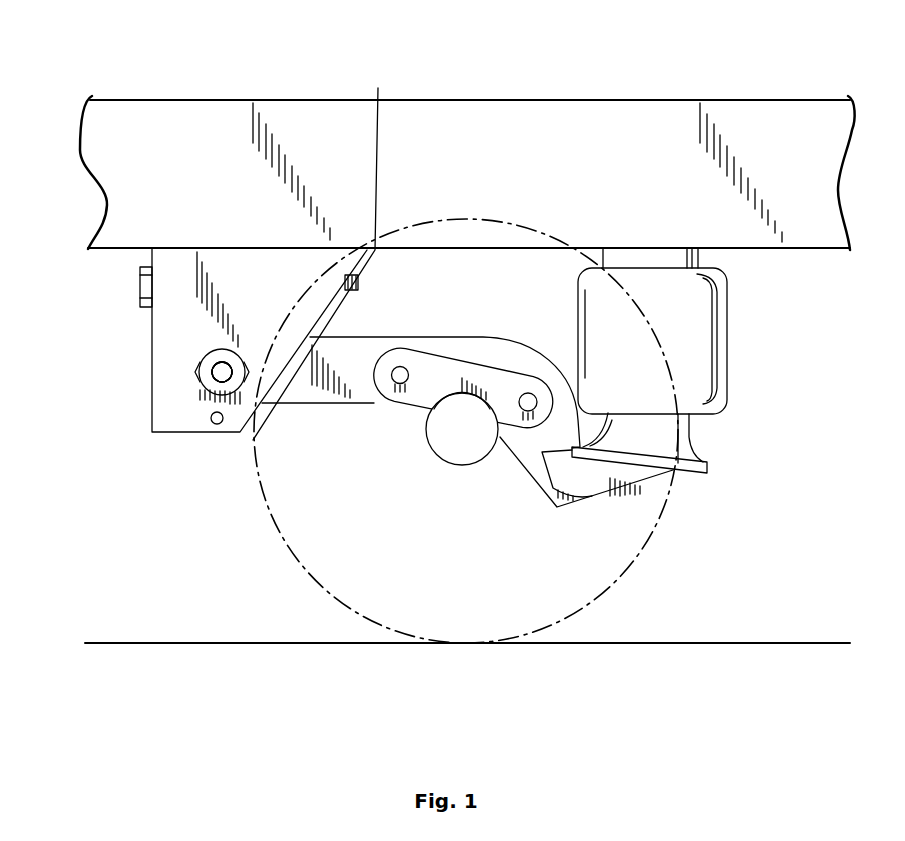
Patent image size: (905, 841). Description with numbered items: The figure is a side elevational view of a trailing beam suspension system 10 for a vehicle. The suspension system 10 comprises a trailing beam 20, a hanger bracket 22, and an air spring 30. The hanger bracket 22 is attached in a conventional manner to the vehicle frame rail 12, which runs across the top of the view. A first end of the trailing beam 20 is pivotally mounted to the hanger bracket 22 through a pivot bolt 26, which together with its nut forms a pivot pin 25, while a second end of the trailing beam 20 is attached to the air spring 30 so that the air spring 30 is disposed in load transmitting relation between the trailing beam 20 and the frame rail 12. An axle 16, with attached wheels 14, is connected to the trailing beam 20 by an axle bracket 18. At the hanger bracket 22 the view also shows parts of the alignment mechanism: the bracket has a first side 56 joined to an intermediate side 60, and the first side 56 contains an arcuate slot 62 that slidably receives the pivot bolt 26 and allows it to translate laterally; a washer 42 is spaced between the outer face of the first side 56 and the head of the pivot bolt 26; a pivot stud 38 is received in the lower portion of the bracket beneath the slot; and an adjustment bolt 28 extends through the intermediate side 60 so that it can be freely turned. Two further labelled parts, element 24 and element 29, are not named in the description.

The trailing beam suspension system 10 is at (727, 88).
The vehicle frame rail 12 is at (418, 130).
The wheels 14 is at (638, 562).
The axle 16 is at (460, 420).
The axle bracket 18 is at (495, 385).
The trailing beam 20 is at (368, 337).
The hanger bracket 22 is at (165, 333).
The trigger plate 24 is at (603, 472).
The pivot pin 25 is at (218, 373).
The pivot bolt 26 is at (222, 373).
The adjustment bolt 28 is at (321, 250).
The fastener 29 is at (140, 288).
The air spring 30 is at (680, 342).
The pivot stud 38 is at (215, 424).
The washer 42 is at (197, 375).
The first side 56 is at (233, 287).
The intermediate side 60 is at (207, 377).
The arcuate slot 62 is at (197, 372).